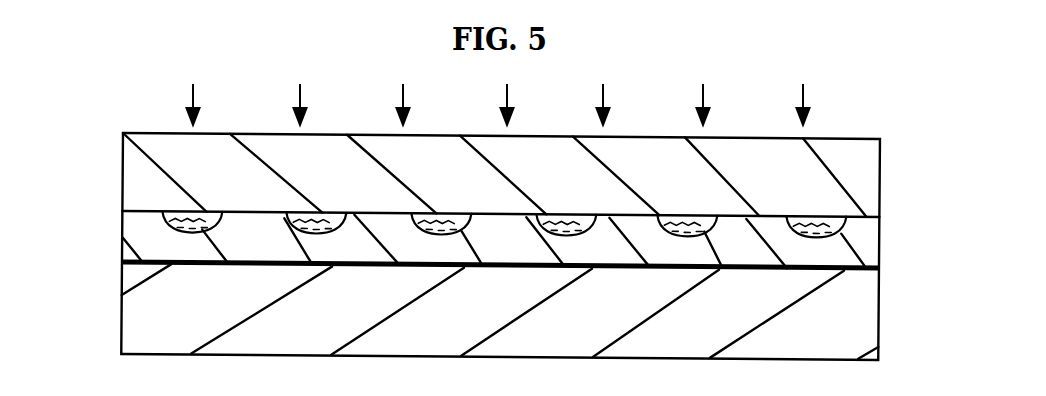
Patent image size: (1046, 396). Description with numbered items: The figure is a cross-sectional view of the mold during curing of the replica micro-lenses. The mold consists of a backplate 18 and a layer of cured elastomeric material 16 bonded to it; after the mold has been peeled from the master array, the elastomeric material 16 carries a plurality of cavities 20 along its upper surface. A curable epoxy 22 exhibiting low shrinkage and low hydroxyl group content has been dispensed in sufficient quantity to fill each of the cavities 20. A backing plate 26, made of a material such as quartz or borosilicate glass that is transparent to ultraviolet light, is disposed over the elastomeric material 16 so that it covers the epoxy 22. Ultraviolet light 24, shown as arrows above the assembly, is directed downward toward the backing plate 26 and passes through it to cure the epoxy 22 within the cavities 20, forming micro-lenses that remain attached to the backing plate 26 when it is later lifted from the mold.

The elastomeric material 16 is at (868, 255).
The backplate 18 is at (857, 332).
The cavities 20 is at (705, 217).
The curable epoxy 22 is at (167, 223).
The ultraviolet light 24 is at (403, 97).
The backing plate 26 is at (136, 170).